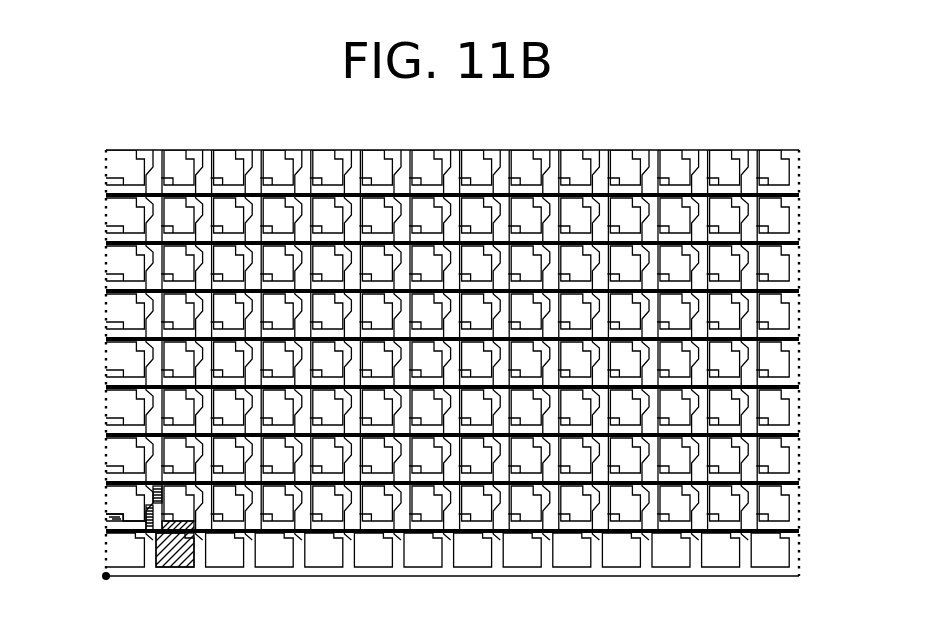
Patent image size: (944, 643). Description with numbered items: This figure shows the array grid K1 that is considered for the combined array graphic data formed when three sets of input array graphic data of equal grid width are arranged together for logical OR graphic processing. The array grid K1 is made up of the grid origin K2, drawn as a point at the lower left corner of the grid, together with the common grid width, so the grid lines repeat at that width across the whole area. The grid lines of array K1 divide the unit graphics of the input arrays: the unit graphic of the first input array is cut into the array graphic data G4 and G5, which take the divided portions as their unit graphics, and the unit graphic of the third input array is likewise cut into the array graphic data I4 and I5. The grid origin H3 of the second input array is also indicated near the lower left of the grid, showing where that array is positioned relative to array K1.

The array grid K1 is at (800, 197).
The grid origin K2 is at (104, 579).
The array graphic data G5 is at (155, 491).
The array graphic data G4 is at (148, 520).
The grid origin H3 is at (104, 518).
The array graphic data I4 is at (192, 568).
The array graphic data I5 is at (197, 529).